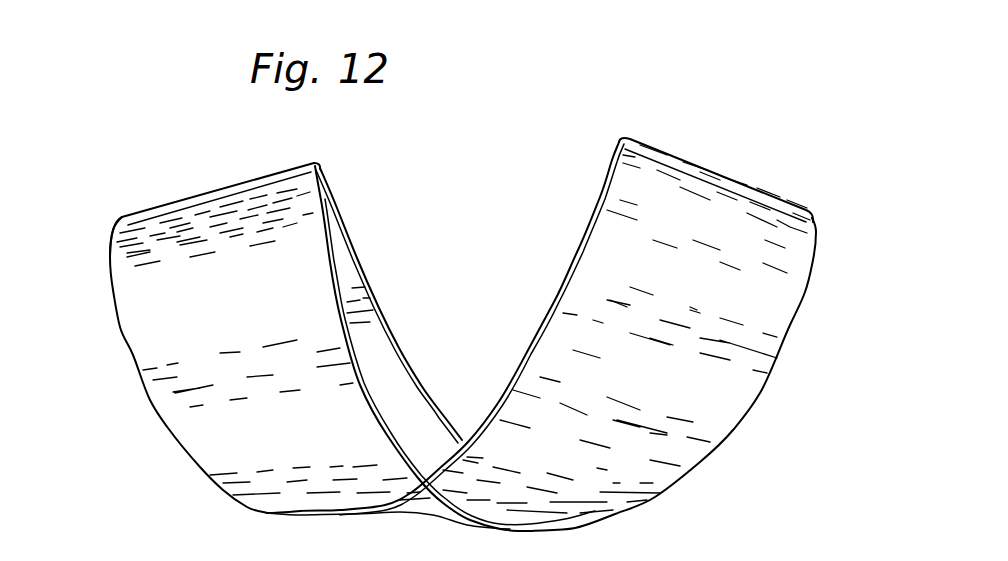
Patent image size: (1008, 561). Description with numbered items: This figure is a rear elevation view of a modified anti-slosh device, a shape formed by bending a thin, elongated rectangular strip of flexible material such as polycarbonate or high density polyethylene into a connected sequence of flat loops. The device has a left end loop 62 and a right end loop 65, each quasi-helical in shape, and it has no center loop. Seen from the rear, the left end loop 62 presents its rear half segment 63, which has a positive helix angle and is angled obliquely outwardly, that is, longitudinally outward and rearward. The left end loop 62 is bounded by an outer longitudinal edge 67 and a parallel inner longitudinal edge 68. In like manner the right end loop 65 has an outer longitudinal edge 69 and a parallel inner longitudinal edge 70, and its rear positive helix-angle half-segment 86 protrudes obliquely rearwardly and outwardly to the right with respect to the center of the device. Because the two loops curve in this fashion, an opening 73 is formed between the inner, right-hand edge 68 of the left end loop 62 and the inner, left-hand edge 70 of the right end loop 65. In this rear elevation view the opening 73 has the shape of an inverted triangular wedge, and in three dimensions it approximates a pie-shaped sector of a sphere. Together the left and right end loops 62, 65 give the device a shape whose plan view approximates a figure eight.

The left end loop 62 is at (754, 160).
The rear half segment 63 is at (713, 405).
The right end loop 65 is at (197, 176).
The outer longitudinal edge 67 is at (818, 258).
The inner longitudinal edge 68 is at (618, 148).
The outer longitudinal edge 69 is at (134, 322).
The inner longitudinal edge 70 is at (321, 167).
The opening 73 is at (466, 173).
The rear positive helix-angle half-segment 86 is at (208, 423).